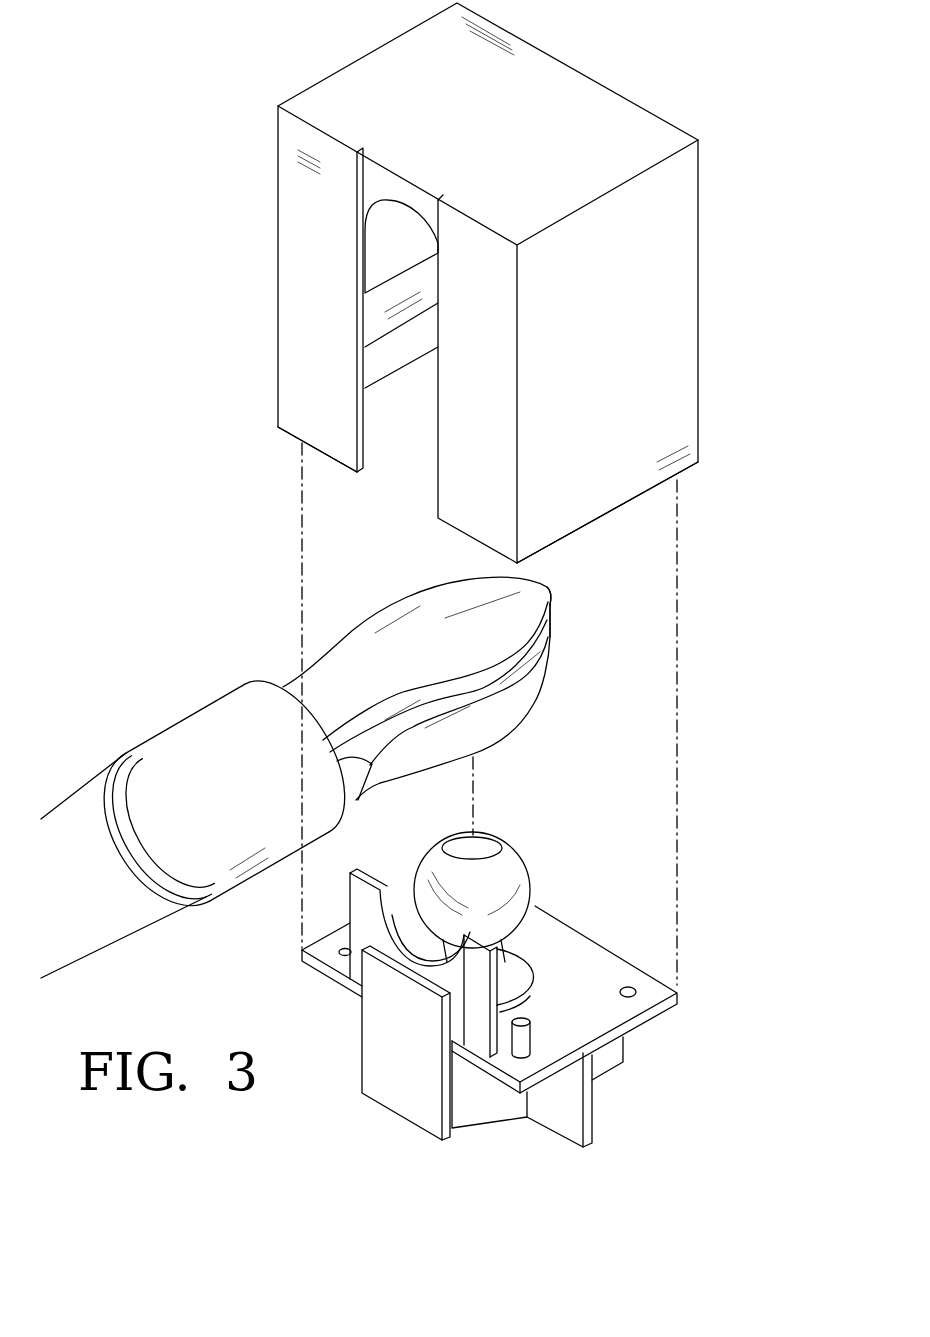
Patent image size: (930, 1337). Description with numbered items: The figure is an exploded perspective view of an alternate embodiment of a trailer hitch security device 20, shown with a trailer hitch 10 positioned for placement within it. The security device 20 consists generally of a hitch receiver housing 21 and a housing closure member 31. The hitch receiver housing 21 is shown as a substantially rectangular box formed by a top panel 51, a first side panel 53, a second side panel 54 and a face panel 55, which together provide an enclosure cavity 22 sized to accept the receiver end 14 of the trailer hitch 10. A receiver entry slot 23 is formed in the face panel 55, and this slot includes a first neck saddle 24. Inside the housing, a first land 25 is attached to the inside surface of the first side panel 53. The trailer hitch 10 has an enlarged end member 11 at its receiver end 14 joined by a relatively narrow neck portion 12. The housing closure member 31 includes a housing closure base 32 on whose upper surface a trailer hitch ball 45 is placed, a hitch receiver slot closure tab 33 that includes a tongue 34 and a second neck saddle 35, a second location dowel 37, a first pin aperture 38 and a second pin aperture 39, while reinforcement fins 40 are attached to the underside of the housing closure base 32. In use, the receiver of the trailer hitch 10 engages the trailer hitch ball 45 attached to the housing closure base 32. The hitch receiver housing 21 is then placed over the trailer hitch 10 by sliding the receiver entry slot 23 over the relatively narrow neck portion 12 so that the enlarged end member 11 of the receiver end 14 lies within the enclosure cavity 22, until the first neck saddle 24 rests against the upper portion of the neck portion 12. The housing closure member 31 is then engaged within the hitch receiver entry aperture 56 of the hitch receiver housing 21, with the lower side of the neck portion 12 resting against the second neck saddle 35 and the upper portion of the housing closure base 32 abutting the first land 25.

The trailer hitch 10 is at (180, 651).
The enlarged end member 11 is at (366, 621).
The relatively narrow neck portion 12 is at (283, 685).
The receiver end 14 is at (553, 642).
The trailer hitch security device 20 is at (733, 50).
The hitch receiver housing 21 is at (245, 189).
The enclosure cavity 22 is at (410, 425).
The receiver entry slot 23 is at (360, 275).
The first neck saddle 24 is at (388, 203).
The first land 25 is at (417, 322).
The housing closure member 31 is at (720, 968).
The housing closure base 32 is at (582, 950).
The hitch receiver slot closure tab 33 is at (338, 1005).
The tongue 34 is at (366, 1039).
The second neck saddle 35 is at (388, 912).
The second location dowel 37 is at (534, 1043).
The first pin aperture 38 is at (343, 950).
The second pin aperture 39 is at (621, 988).
The reinforcement fins 40 is at (488, 1115).
The trailer hitch ball 45 is at (532, 890).
The top panel 51 is at (644, 127).
The first side panel 53 is at (375, 373).
The second side panel 54 is at (688, 289).
The face panel 55 is at (290, 366).
The hitch receiver entry aperture 56 is at (585, 478).